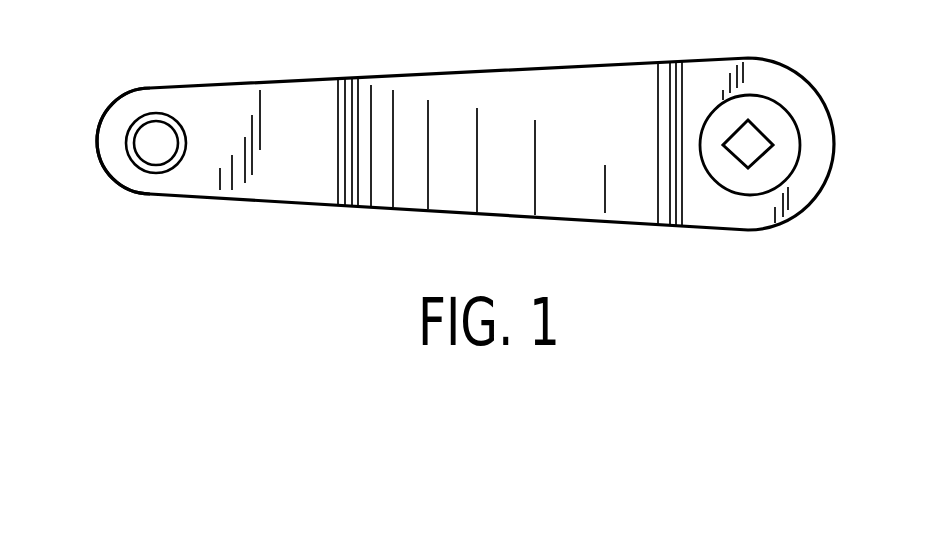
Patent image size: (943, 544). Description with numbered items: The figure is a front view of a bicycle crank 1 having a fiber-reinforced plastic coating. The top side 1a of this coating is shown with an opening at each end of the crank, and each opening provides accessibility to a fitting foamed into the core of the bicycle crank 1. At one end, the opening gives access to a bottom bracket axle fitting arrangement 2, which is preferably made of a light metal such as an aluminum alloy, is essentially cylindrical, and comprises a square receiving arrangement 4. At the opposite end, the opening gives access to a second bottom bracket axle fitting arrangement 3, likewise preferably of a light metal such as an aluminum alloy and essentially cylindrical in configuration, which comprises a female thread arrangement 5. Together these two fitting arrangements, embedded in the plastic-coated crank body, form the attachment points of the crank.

The bicycle crank 1 is at (222, 266).
The top side 1a is at (488, 95).
The bottom bracket axle fitting arrangement 2 is at (802, 182).
The bottom bracket axle fitting arrangement 3 is at (142, 181).
The square receiving arrangement 4 is at (752, 142).
The female thread arrangement 5 is at (147, 117).